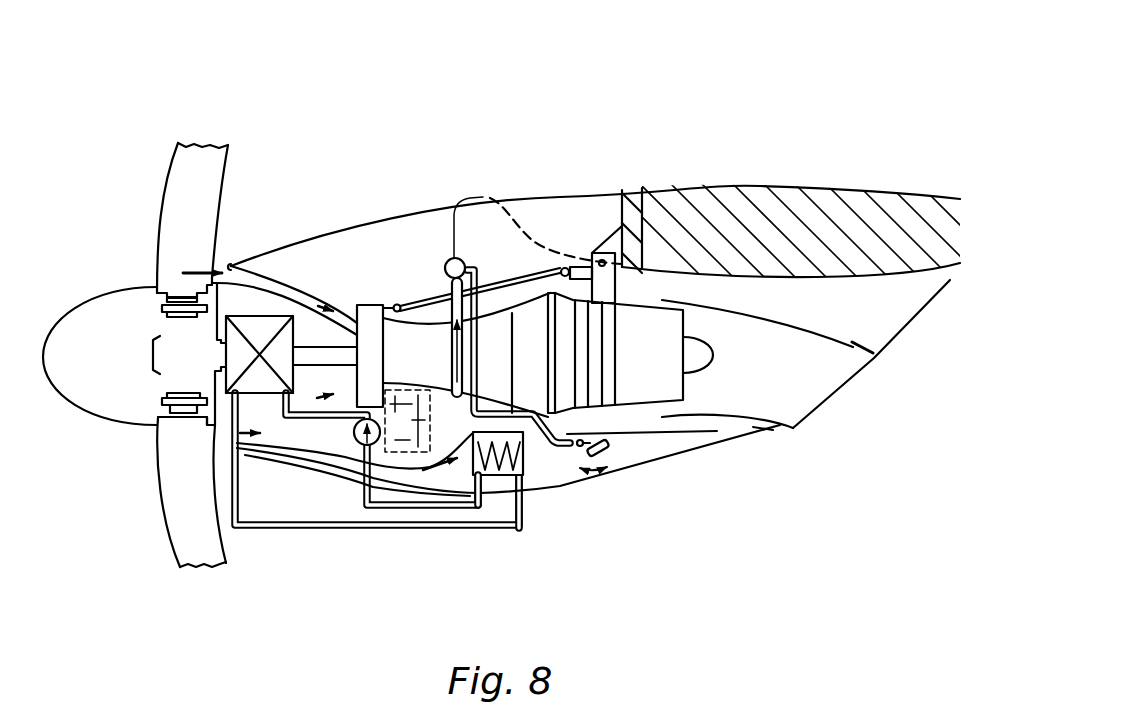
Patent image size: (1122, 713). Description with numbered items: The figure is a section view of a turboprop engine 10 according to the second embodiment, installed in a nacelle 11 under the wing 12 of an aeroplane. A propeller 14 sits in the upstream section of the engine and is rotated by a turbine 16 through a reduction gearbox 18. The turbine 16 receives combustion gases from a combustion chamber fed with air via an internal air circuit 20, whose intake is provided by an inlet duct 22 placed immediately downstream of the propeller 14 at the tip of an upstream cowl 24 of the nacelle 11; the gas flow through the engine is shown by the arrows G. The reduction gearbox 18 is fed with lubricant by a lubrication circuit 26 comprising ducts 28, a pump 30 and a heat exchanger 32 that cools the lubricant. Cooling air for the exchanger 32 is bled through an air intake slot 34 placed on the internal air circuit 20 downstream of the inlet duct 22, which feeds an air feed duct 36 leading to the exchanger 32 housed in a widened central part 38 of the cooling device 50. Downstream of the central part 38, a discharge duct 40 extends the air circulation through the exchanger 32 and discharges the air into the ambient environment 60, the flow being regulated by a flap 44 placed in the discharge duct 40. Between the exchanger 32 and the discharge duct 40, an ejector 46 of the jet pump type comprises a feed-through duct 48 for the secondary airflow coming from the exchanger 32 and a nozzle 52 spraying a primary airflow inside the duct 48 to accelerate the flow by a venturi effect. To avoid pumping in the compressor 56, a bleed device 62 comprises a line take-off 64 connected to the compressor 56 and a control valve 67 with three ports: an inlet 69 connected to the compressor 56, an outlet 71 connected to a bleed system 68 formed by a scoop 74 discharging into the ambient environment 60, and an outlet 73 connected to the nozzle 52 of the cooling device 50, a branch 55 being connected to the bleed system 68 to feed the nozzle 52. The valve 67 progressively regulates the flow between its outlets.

The turboprop engine 10 is at (342, 260).
The nacelle 11 is at (367, 272).
The wing 12 is at (712, 230).
The propeller 14 is at (182, 194).
The turbine 16 is at (487, 477).
The reduction gearbox 18 is at (253, 378).
The internal air circuit 20 is at (362, 300).
The inlet duct 22 is at (240, 278).
The upstream cowl 24 is at (327, 297).
The lubrication circuit 26 is at (332, 542).
The ducts 28 is at (393, 530).
The pump 30 is at (363, 440).
The heat exchanger 32 is at (500, 477).
The air intake slot 34 is at (273, 437).
The air feed duct 36 is at (312, 455).
The central part 38 is at (455, 480).
The discharge duct 40 is at (687, 442).
The flap 44 is at (607, 445).
The ejector 46 is at (552, 467).
The feed-through duct 48 is at (582, 428).
The cooling device 50 is at (553, 545).
The nozzle 52 is at (568, 453).
The branch 55 is at (506, 195).
The compressor 56 is at (417, 297).
The ambient environment 60 is at (871, 354).
The bleed device 62 is at (431, 287).
The line take-off 64 is at (490, 430).
The control valve 67 is at (455, 240).
The bleed system 68 is at (520, 200).
The inlet 69 is at (446, 262).
The outlet 71 is at (452, 228).
The outlet 73 is at (463, 235).
The scoop 74 is at (548, 260).
The arrows G is at (322, 282).